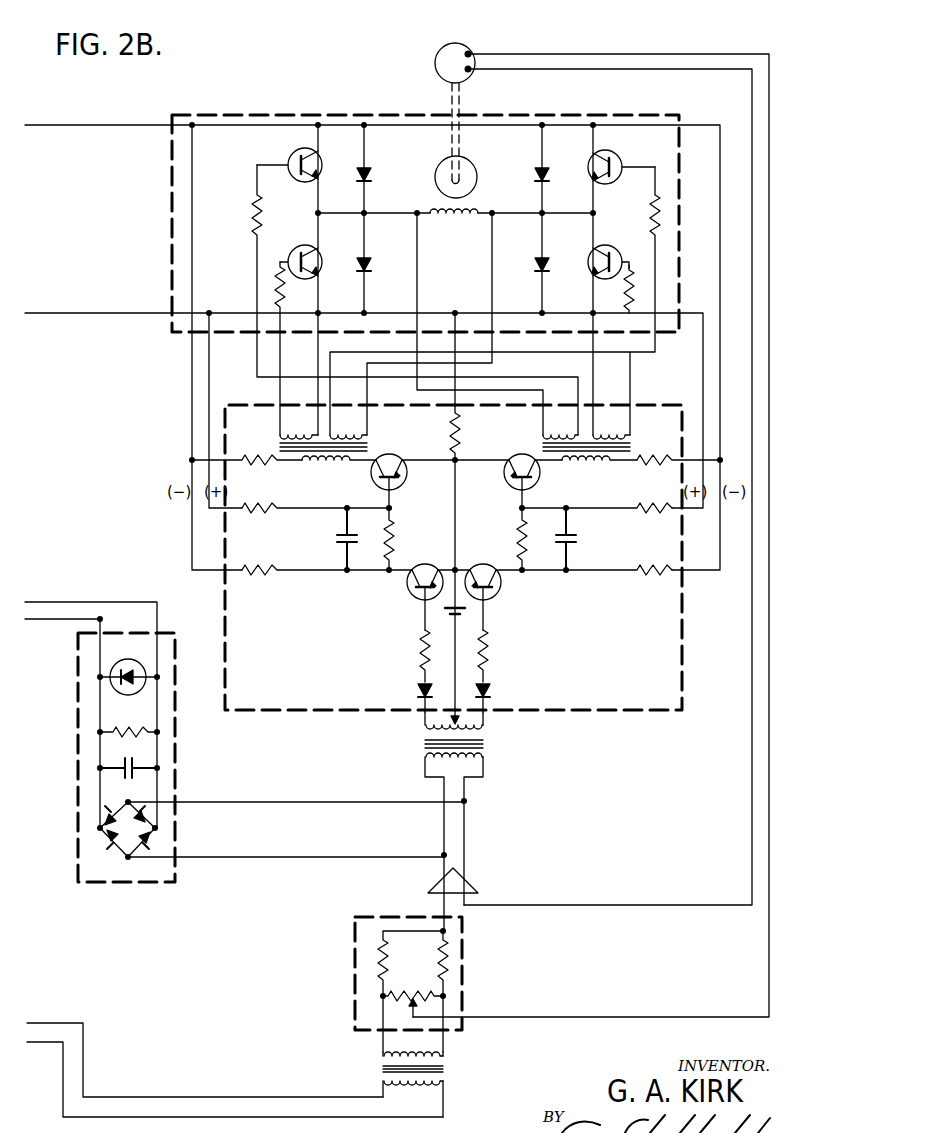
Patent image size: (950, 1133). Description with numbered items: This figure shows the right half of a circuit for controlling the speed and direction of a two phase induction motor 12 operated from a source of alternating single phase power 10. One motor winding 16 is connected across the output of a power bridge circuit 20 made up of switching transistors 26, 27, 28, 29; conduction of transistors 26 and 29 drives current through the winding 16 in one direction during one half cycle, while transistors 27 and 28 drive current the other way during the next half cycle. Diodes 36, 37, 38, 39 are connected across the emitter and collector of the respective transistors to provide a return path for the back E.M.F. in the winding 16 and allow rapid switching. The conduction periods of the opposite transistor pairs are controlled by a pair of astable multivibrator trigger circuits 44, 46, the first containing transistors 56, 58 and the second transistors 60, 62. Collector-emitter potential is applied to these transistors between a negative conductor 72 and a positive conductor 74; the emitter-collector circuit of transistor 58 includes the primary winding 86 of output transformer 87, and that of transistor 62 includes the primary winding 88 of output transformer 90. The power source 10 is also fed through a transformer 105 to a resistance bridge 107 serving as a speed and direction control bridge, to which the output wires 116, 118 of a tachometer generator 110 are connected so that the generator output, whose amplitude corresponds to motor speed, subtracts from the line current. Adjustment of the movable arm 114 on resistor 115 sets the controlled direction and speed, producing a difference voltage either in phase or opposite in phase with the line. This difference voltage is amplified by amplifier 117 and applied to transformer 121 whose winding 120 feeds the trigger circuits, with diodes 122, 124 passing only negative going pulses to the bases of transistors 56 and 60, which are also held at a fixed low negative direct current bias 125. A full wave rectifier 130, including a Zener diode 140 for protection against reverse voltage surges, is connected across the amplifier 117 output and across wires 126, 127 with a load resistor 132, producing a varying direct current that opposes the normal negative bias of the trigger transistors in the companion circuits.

The source of alternating single phase power 10 is at (53, 1041).
The two phase induction motor 12 is at (437, 170).
The motor winding 16 is at (452, 217).
The power bridge circuit 20 is at (337, 112).
The switching transistor 26 is at (294, 160).
The switching transistor 27 is at (297, 251).
The switching transistor 28 is at (617, 159).
The switching transistor 29 is at (611, 251).
The diode 36 is at (361, 171).
The diode 37 is at (368, 262).
The diode 38 is at (540, 171).
The diode 39 is at (545, 262).
The multivibrator trigger circuit 44 is at (245, 404).
The multivibrator trigger circuit 46 is at (643, 404).
The transistor 56 is at (407, 591).
The transistor 58 is at (405, 479).
The transistor 60 is at (500, 591).
The transistor 62 is at (510, 455).
The negative conductor 72 is at (57, 127).
The positive conductor 74 is at (75, 316).
The primary winding 86 is at (332, 467).
The output transformer 87 is at (368, 444).
The primary winding 88 is at (589, 467).
The output transformer 90 is at (628, 444).
The transformer 105 is at (383, 1069).
The resistance bridge 107 is at (412, 915).
The tachometer generator 110 is at (468, 53).
The movable arm 114 is at (412, 1006).
The resistor 115 is at (412, 986).
The output wire 116 is at (690, 70).
The amplifier 117 is at (466, 883).
The output wire 118 is at (697, 54).
The winding of transformer 121 120 is at (427, 758).
The transformer 121 is at (425, 743).
The diode 122 is at (418, 690).
The diode 124 is at (492, 690).
The direct current bias voltage 125 is at (465, 610).
The wire 126 is at (38, 620).
The wire 127 is at (62, 602).
The full wave rectifier 130 is at (78, 740).
The load resistor 132 is at (128, 719).
The Zener diode 140 is at (112, 674).